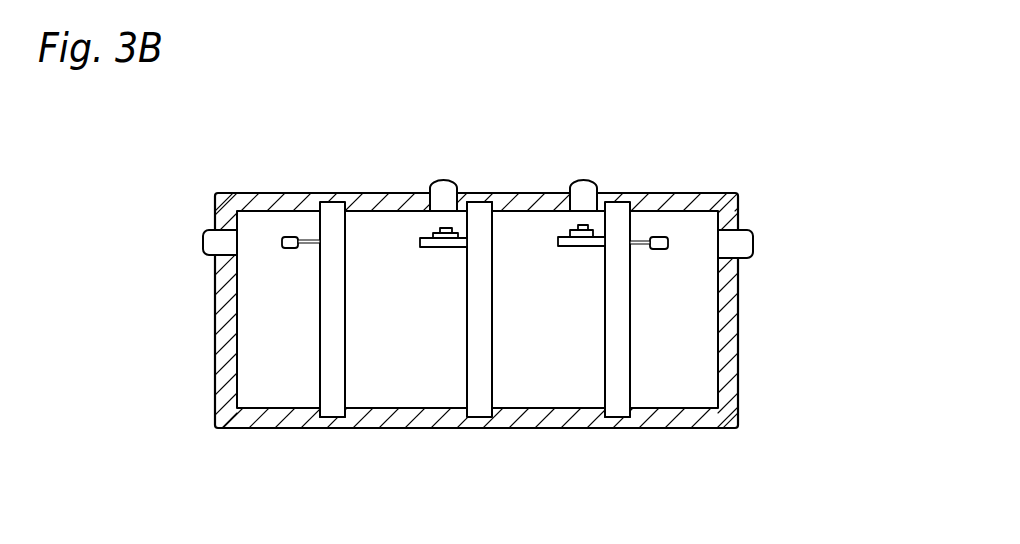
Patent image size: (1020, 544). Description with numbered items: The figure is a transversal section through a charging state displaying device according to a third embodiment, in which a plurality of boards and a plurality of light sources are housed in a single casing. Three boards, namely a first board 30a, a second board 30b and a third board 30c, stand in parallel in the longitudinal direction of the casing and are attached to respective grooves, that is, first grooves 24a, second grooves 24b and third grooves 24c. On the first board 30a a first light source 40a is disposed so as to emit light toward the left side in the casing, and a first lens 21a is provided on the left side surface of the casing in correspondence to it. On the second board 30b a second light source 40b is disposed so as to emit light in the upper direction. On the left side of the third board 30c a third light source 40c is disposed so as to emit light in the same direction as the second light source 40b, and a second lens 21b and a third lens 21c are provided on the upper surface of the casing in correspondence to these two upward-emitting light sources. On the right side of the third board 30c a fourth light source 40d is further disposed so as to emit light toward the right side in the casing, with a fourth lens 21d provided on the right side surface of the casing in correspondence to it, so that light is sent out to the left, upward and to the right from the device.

The first lens 21a is at (205, 230).
The second lens 21b is at (442, 188).
The third lens 21c is at (588, 190).
The fourth lens 21d is at (746, 232).
The first grooves 24a is at (328, 420).
The second grooves 24b is at (485, 202).
The third grooves 24c is at (614, 420).
The first board 30a is at (333, 329).
The second board 30b is at (477, 398).
The third board 30c is at (628, 342).
The first light source 40a is at (289, 237).
The second light source 40b is at (440, 250).
The third light source 40c is at (578, 250).
The fourth light source 40d is at (659, 237).